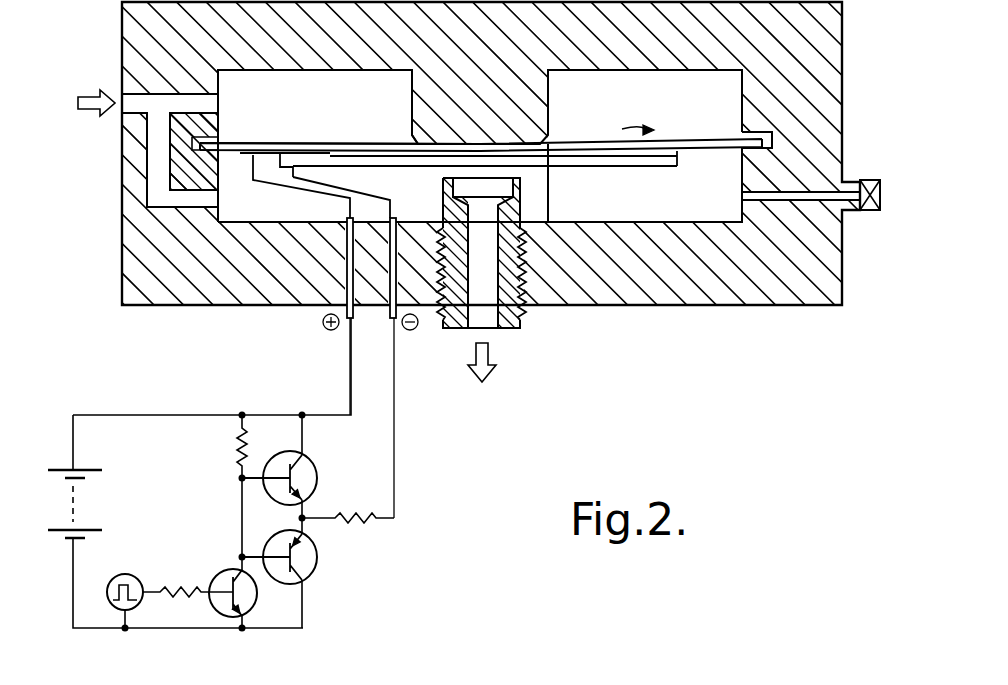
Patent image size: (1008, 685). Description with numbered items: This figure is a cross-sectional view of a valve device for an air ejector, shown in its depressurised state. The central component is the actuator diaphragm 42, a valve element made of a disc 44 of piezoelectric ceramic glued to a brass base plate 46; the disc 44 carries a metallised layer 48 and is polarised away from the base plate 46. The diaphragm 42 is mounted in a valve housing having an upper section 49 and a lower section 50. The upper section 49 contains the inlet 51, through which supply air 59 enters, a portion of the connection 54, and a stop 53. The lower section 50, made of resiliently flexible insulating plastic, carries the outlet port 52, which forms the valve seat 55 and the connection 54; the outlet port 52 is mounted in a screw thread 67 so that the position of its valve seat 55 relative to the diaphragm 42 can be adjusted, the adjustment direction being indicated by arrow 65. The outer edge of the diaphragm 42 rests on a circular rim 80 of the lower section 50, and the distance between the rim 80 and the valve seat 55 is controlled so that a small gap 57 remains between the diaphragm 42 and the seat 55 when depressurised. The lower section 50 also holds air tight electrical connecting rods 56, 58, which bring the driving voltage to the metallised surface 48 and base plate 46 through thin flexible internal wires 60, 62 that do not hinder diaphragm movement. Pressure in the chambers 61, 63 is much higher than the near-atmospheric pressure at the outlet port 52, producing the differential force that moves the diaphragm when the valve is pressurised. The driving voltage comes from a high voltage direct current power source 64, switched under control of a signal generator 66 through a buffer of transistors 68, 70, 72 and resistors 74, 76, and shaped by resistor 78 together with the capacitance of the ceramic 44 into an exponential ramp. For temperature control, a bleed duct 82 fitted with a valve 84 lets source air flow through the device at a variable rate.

The actuator diaphragm 42 is at (623, 133).
The piezoelectric ceramic disc 44 is at (318, 152).
The base plate 46 is at (328, 143).
The metallised layer 48 is at (360, 164).
The upper valve housing section 49 is at (122, 58).
The lower valve housing section 50 is at (135, 173).
The inlet 51 is at (138, 100).
The outlet port 52 is at (507, 300).
The stop 53 is at (502, 137).
The connection 54 is at (160, 173).
The valve seat 55 is at (513, 177).
The electrical connecting rod 56 is at (347, 328).
The gap 57 is at (513, 172).
The electrical connecting rod 58 is at (400, 328).
The supply air 59 is at (81, 103).
The internal wire 60 is at (280, 198).
The chamber 61 is at (274, 107).
The internal wire 62 is at (322, 193).
The chamber 63 is at (655, 221).
The high voltage direct current power source 64 is at (132, 522).
The direction of adjustment 65 is at (483, 379).
The signal generator 66 is at (120, 575).
The screw thread 67 is at (530, 280).
The transistor 68 is at (312, 484).
The transistor 70 is at (222, 582).
The transistor 72 is at (303, 577).
The resistor 74 is at (238, 463).
The resistor 76 is at (168, 600).
The resistor 78 is at (355, 523).
The circular rim 80 is at (742, 167).
The bleed duct 82 is at (805, 200).
The valve 84 is at (869, 180).